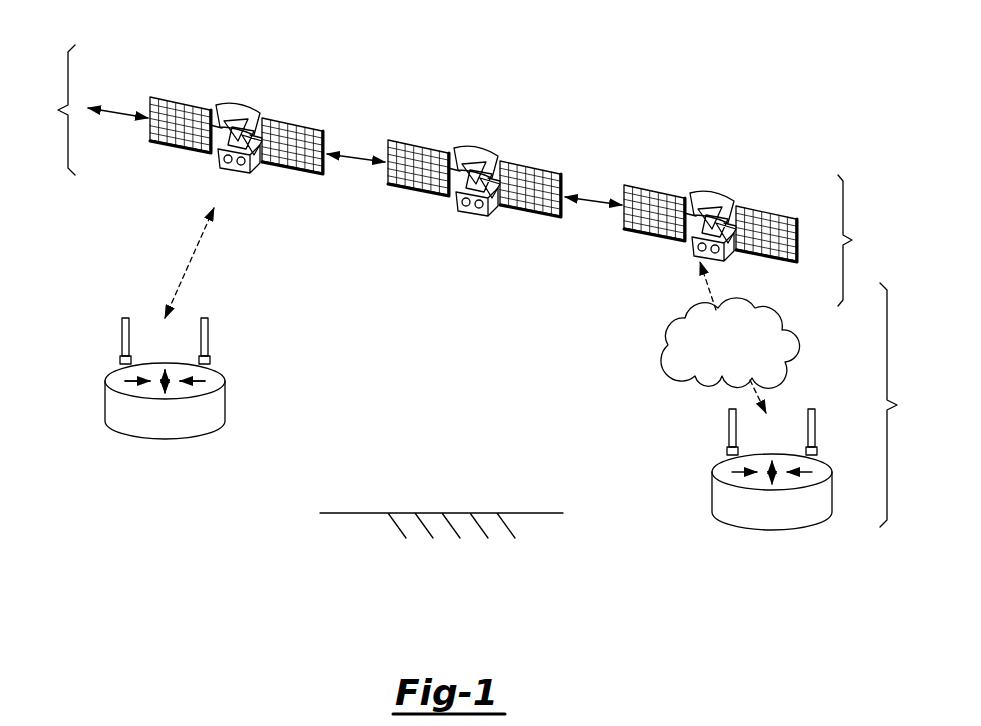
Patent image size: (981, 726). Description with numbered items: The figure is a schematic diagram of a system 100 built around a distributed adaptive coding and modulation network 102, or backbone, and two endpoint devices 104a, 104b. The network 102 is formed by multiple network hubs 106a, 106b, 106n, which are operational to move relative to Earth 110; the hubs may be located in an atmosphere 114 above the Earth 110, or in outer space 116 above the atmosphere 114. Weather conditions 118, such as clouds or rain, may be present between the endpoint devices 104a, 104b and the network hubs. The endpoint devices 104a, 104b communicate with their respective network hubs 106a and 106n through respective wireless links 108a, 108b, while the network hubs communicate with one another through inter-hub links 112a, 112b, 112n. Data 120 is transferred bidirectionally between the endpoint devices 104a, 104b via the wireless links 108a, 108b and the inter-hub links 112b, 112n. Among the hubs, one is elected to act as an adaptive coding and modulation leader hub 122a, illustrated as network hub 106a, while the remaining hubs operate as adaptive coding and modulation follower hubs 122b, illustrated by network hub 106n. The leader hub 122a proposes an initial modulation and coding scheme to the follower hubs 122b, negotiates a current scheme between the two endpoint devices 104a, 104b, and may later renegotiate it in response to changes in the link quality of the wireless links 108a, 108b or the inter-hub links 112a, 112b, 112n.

The system 100 is at (640, 70).
The distributed adaptive coding and modulation network 102 is at (48, 110).
The endpoint device 104a is at (107, 400).
The endpoint device 104b is at (713, 490).
The network hub 106a is at (240, 107).
The network hub 106b is at (479, 150).
The network hub 106n is at (768, 207).
The wireless link 108a is at (188, 262).
The wireless link 108b is at (710, 292).
The Earth 110 is at (368, 513).
The inter-hub link 112a is at (113, 113).
The inter-hub link 112b is at (358, 186).
The inter-hub link 112n is at (597, 200).
The atmosphere 114 is at (910, 405).
The outer space 116 is at (868, 240).
The weather conditions 118 is at (668, 362).
The data 120 is at (352, 158).
The adaptive coding and modulation leader hub 122a is at (298, 118).
The adaptive coding and modulation follower hub 122b is at (530, 165).